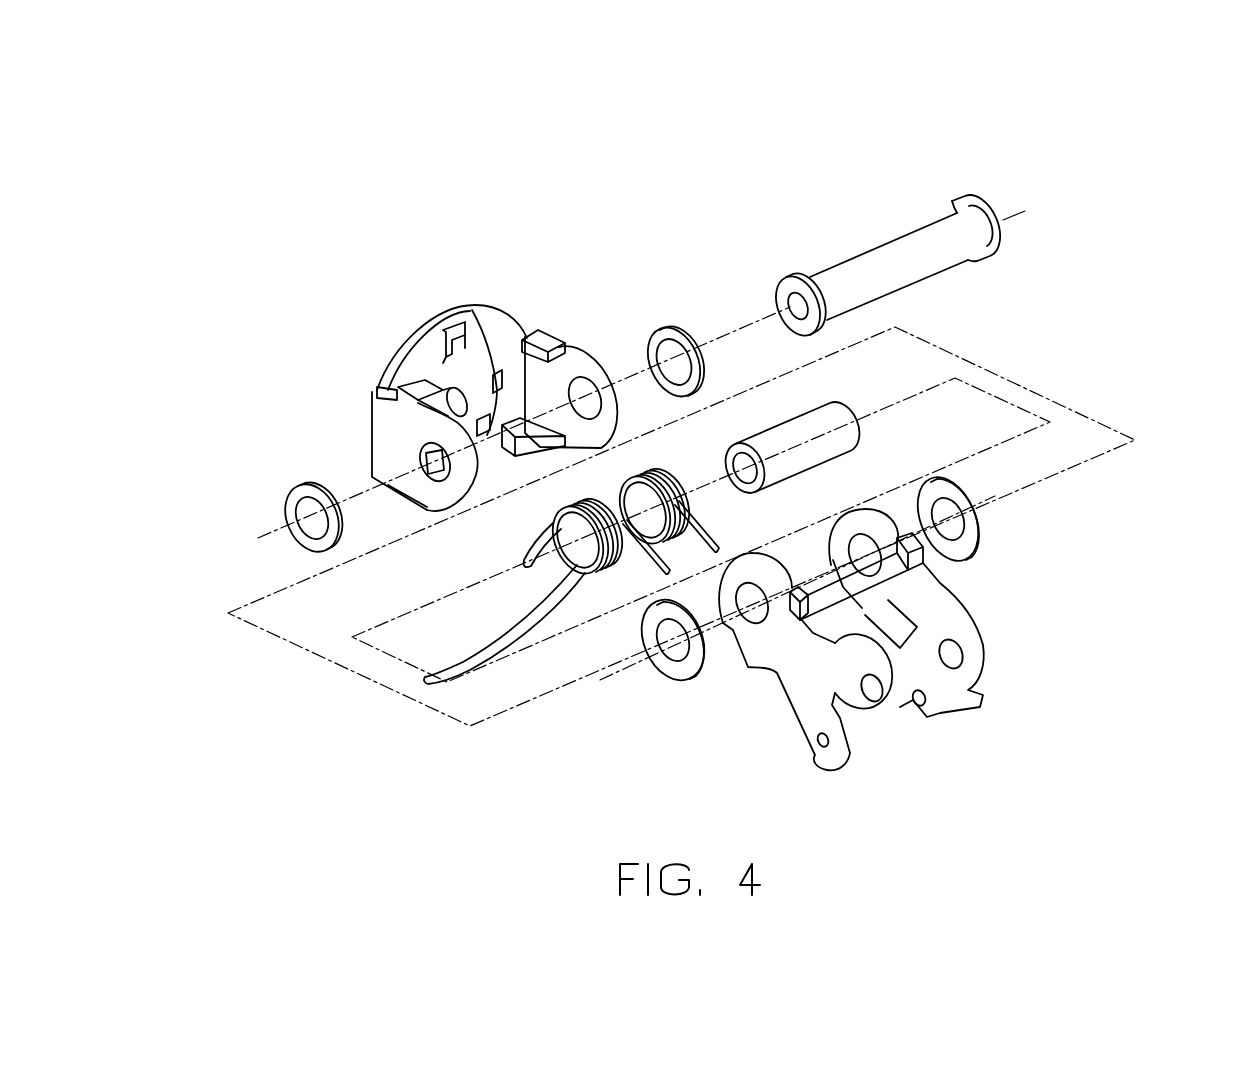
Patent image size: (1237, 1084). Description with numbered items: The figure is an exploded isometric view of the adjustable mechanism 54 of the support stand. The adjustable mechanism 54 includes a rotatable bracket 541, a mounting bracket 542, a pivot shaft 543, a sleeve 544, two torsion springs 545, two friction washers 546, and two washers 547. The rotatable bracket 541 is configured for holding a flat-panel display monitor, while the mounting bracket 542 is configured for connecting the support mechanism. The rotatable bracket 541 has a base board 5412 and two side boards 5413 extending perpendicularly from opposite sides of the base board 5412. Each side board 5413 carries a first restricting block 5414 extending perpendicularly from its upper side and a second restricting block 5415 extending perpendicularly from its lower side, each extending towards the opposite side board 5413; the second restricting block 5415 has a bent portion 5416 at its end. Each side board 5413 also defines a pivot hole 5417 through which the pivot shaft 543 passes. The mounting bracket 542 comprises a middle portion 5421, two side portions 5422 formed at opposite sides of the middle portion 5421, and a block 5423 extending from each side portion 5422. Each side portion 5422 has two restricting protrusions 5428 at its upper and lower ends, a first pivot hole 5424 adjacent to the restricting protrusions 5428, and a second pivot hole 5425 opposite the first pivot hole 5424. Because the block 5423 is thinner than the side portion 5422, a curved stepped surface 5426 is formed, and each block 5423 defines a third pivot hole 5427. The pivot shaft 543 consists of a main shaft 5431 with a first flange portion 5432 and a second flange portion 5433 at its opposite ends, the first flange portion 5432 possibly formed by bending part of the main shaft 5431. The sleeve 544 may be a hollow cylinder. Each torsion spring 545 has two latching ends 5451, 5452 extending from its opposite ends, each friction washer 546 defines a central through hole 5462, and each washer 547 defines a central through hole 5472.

The adjustable mechanism 54 is at (452, 138).
The rotatable bracket 541 is at (439, 292).
The base board 5412 is at (422, 360).
The side board 5413 is at (388, 463).
The first restricting block 5414 is at (427, 390).
The second restricting block 5415 is at (505, 418).
The bent portion 5416 is at (473, 332).
The pivot hole 5417 is at (428, 452).
The pivot shaft 543 is at (1018, 240).
The main shaft 5431 is at (890, 252).
The first flange portion 5432 is at (802, 283).
The second flange portion 5433 is at (983, 203).
The sleeve 544 is at (835, 410).
The torsion spring 545 is at (529, 572).
The latching end 5451 is at (653, 565).
The latching end 5452 is at (424, 678).
The friction washer 546 is at (665, 330).
The through hole 5462 is at (680, 355).
The washer 547 is at (975, 535).
The through hole 5472 is at (960, 510).
The mounting bracket 542 is at (975, 602).
The middle portion 5421 is at (930, 705).
The side portion 5422 is at (805, 675).
The block 5423 is at (888, 704).
The first pivot hole 5424 is at (758, 608).
The second pivot hole 5425 is at (822, 746).
The stepped surface 5426 is at (858, 722).
The third pivot hole 5427 is at (952, 655).
The restricting protrusion 5428 is at (910, 545).